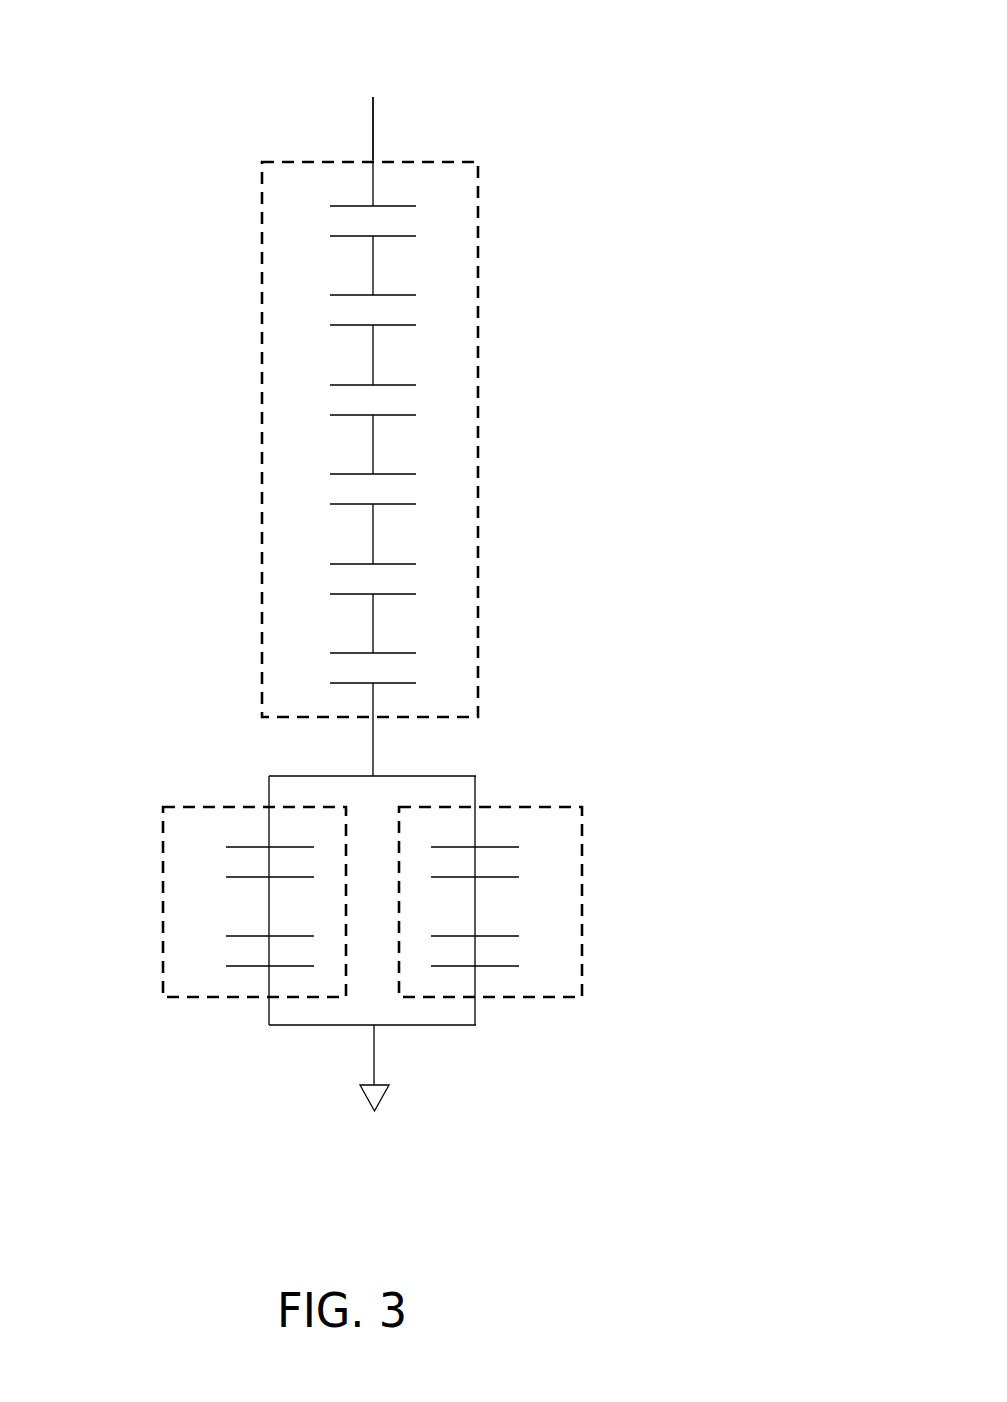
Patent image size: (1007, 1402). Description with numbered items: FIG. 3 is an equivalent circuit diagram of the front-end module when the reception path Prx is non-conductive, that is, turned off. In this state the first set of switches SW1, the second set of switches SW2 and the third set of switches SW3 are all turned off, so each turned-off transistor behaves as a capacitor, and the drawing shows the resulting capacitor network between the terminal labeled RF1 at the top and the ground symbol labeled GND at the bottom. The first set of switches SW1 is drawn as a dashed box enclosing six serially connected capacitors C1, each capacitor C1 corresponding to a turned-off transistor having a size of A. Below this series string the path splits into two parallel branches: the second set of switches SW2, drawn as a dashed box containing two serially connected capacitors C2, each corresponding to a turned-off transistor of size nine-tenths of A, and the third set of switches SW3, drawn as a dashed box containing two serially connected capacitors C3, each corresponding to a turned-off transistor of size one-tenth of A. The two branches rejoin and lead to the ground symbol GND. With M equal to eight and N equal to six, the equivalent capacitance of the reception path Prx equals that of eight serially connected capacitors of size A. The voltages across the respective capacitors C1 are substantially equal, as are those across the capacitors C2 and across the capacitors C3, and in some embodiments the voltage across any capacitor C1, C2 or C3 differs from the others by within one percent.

The reception path Prx is at (520, 103).
The element RF1 is at (375, 113).
The first set of switches SW1 is at (478, 440).
The capacitor C1 is at (353, 486).
The second set of switches SW2 is at (163, 903).
The capacitor C2 is at (246, 905).
The third set of switches SW3 is at (582, 905).
The capacitor C3 is at (498, 905).
The element GND is at (373, 1088).